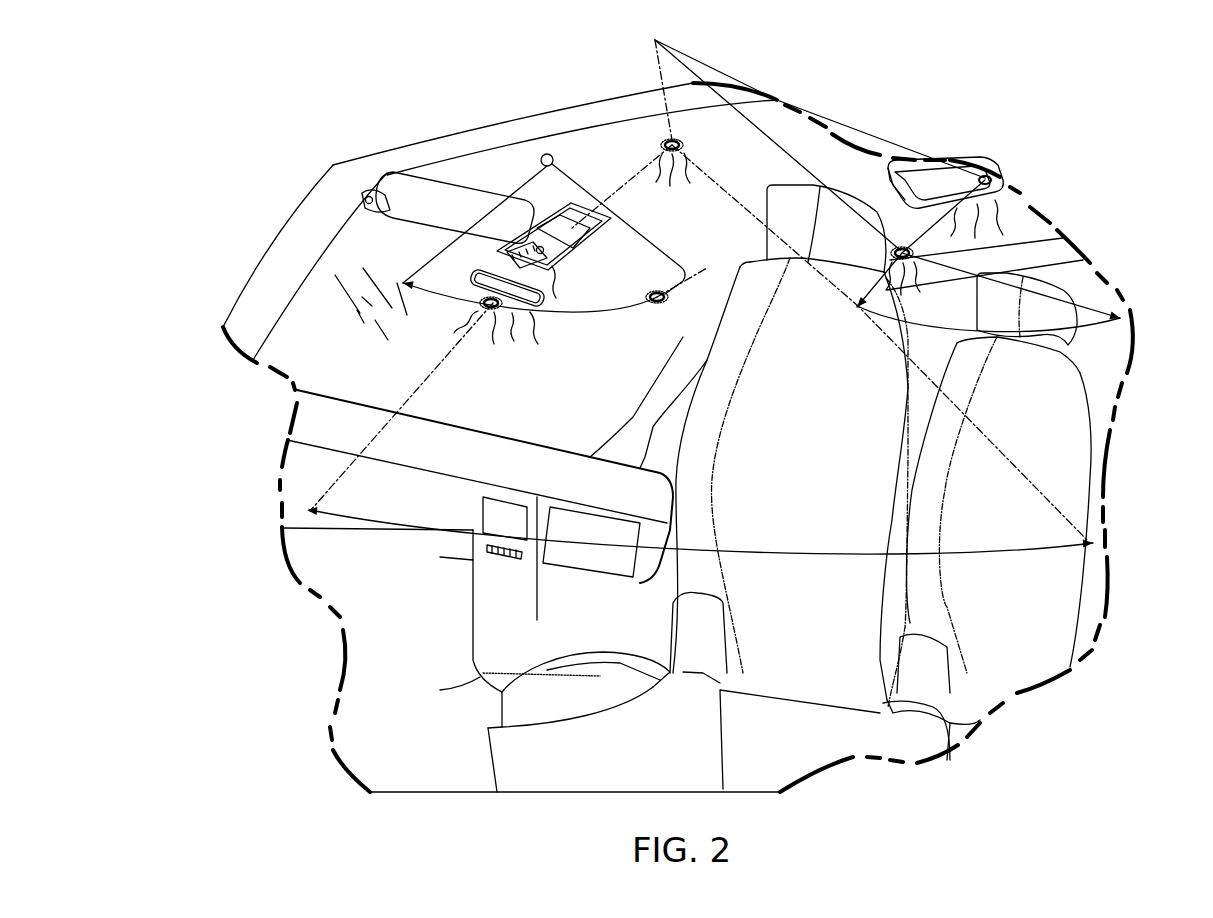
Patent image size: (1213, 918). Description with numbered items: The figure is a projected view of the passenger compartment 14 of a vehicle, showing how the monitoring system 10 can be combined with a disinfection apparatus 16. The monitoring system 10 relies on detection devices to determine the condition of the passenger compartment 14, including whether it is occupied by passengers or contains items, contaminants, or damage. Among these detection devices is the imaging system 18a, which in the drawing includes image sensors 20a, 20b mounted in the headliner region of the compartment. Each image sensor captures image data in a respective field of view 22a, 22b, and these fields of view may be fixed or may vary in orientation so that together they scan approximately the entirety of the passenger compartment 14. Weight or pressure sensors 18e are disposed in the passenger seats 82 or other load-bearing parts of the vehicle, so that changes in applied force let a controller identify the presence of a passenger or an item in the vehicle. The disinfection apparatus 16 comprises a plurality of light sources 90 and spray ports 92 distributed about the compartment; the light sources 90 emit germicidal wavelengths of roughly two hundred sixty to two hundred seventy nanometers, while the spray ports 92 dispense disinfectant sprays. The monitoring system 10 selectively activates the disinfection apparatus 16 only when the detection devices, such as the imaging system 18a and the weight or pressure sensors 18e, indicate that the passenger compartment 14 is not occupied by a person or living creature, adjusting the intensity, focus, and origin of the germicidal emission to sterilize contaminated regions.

The monitoring system 10 is at (678, 426).
The disinfection apparatus 16 is at (392, 110).
The passenger compartment 14 is at (287, 273).
The imaging system 18a is at (523, 173).
The image sensor 20a is at (551, 154).
The image sensor 20b is at (985, 178).
The field of view 22a is at (621, 276).
The field of view 22b is at (699, 226).
The light sources 90 is at (728, 130).
The spray ports 92 is at (655, 40).
The weight or pressure sensors 18e is at (462, 687).
The passenger seats 82 is at (1063, 468).